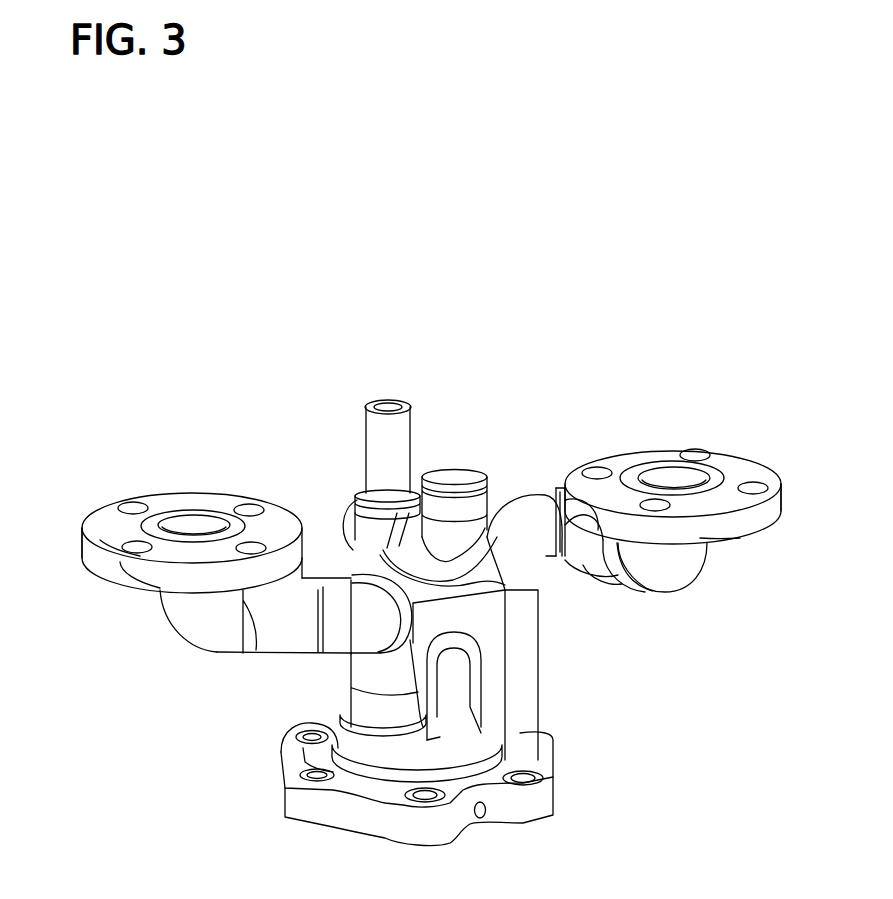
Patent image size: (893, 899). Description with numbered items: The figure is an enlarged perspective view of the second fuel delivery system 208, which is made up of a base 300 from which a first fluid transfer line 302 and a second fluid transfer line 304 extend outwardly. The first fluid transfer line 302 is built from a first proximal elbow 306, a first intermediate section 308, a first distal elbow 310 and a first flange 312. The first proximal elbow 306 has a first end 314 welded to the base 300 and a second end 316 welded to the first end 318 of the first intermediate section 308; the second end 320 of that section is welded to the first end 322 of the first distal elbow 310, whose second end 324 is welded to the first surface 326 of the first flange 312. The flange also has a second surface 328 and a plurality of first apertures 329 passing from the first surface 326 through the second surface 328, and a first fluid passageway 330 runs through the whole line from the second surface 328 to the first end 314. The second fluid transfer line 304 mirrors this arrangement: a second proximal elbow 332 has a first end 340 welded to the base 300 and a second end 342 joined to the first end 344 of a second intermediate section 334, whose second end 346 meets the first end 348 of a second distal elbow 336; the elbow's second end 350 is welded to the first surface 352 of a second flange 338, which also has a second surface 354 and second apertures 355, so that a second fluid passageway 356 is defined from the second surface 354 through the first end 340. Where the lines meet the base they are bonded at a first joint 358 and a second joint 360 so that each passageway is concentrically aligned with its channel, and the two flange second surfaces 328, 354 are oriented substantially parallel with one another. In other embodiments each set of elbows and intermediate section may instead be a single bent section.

The second fuel delivery system 208 is at (214, 212).
The base 300 is at (444, 378).
The first fluid transfer line 302 is at (190, 405).
The second fluid transfer line 304 is at (712, 340).
The first proximal elbow 306 is at (356, 520).
The first intermediate section 308 is at (283, 560).
The first distal elbow 310 is at (171, 626).
The first flange 312 is at (87, 573).
The first end of first proximal elbow 314 is at (348, 577).
The second end of first proximal elbow 316 is at (337, 614).
The first end of first intermediate section 318 is at (300, 637).
The second end of first intermediate section 320 is at (250, 638).
The first end of first distal elbow 322 is at (240, 638).
The second end of first distal elbow 324 is at (186, 524).
The first surface of first flange 326 is at (125, 586).
The second surface of first flange 328 is at (115, 503).
The first apertures 329 is at (245, 507).
The first fluid passageway 330 is at (185, 527).
The second proximal elbow 332 is at (562, 470).
The second intermediate section 334 is at (621, 593).
The second distal elbow 336 is at (691, 592).
The second flange 338 is at (780, 538).
The first end of second proximal elbow 340 is at (565, 557).
The second end of second proximal elbow 342 is at (598, 578).
The first end of second intermediate section 344 is at (612, 578).
The second end of second intermediate section 346 is at (603, 545).
The first end of second distal elbow 348 is at (612, 588).
The second end of second distal elbow 350 is at (660, 477).
The first surface of second flange 352 is at (728, 545).
The second surface of second flange 354 is at (750, 466).
The second apertures 355 is at (694, 452).
The second fluid passageway 356 is at (715, 478).
The first joint 358 is at (396, 642).
The second joint 360 is at (562, 499).